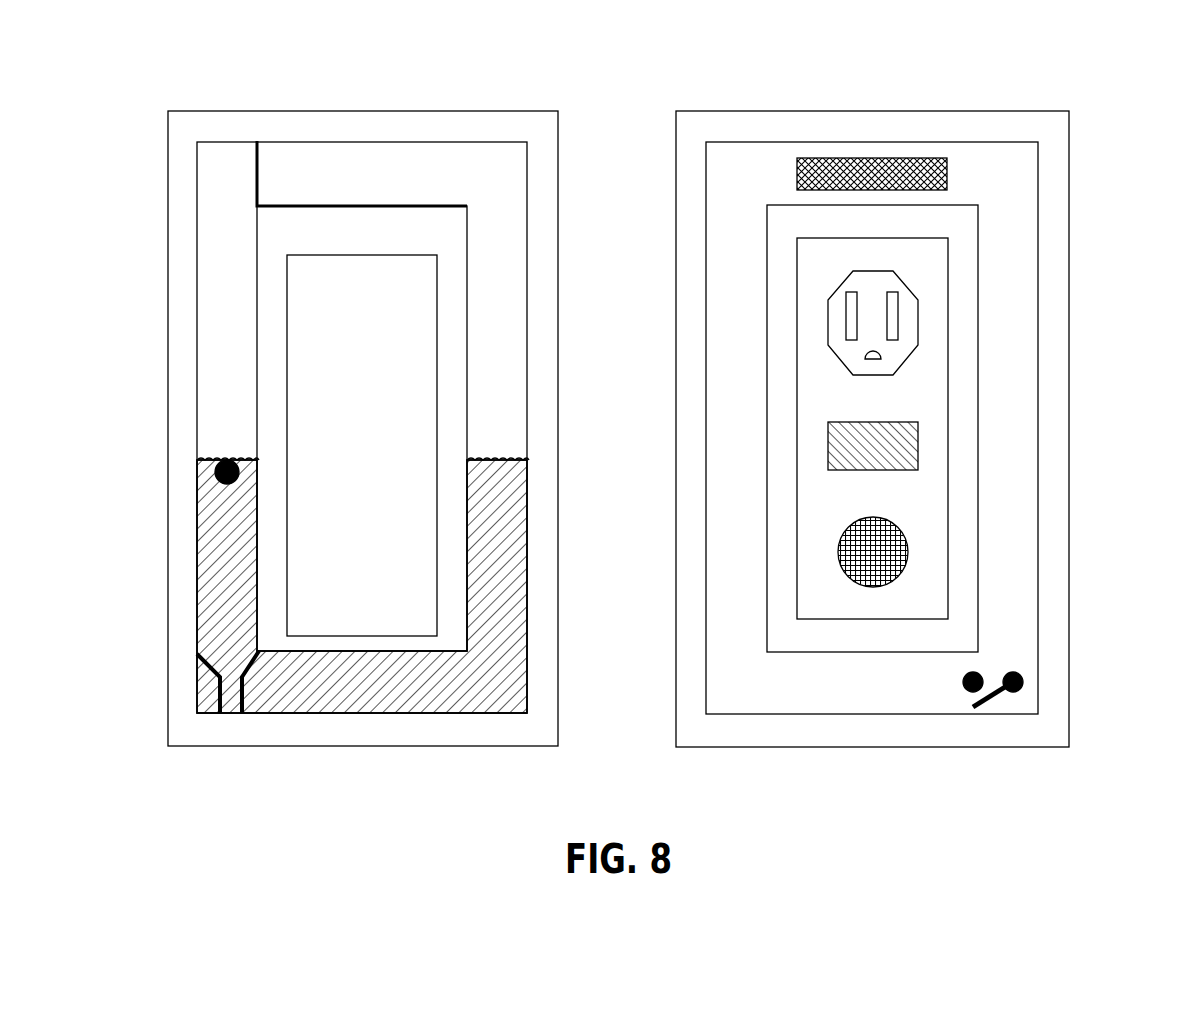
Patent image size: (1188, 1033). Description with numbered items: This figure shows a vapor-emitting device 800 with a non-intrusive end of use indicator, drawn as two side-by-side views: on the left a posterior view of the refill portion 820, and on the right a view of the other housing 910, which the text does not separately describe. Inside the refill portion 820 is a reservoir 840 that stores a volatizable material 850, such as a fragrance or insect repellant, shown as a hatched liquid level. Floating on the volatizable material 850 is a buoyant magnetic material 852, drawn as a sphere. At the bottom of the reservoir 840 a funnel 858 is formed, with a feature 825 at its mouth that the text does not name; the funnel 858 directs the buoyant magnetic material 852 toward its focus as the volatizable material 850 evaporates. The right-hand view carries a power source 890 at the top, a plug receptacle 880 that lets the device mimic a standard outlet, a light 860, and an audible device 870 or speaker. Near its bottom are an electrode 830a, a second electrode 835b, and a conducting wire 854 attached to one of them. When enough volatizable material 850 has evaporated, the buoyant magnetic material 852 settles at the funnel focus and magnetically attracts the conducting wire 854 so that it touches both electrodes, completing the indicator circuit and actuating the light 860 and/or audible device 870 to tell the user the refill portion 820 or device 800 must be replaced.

The vapor-emitting device 800 is at (124, 105).
The refill portion 820 is at (353, 111).
The reservoir 840 is at (197, 357).
The volatizable material 850 is at (222, 570).
The buoyant magnetic material 852 is at (215, 466).
The drain channel 825 is at (225, 675).
The funnel 858 is at (217, 697).
The front panel housing 910 is at (865, 111).
The power source 890 is at (840, 170).
The plug receptacle 880 is at (918, 300).
The light 860 is at (918, 446).
The audible device 870 is at (898, 532).
The electrode 830a is at (968, 690).
The switch pivot 835b is at (1018, 690).
The conducting wire 854 is at (995, 700).